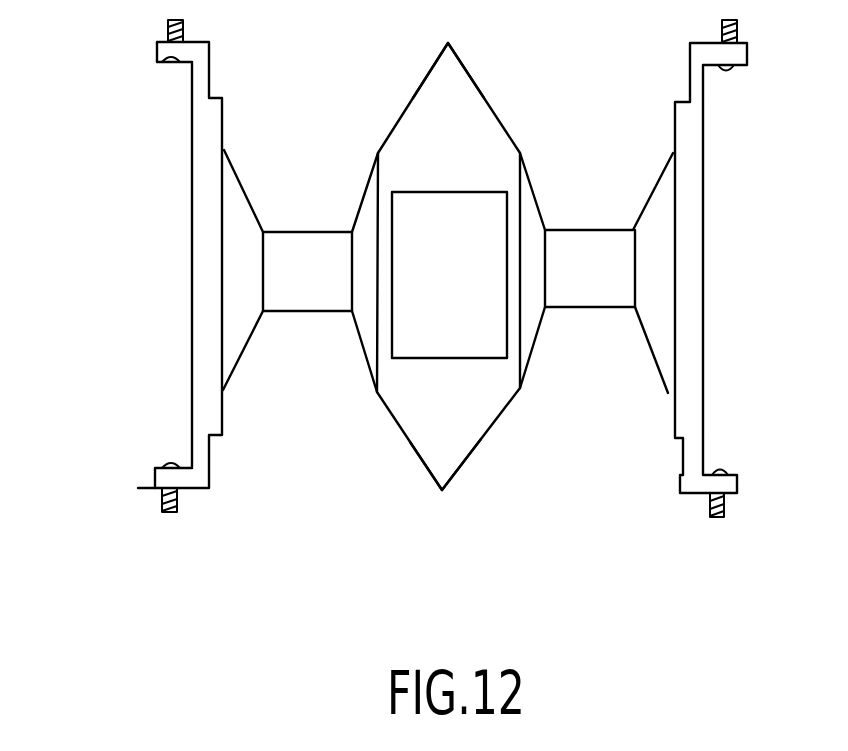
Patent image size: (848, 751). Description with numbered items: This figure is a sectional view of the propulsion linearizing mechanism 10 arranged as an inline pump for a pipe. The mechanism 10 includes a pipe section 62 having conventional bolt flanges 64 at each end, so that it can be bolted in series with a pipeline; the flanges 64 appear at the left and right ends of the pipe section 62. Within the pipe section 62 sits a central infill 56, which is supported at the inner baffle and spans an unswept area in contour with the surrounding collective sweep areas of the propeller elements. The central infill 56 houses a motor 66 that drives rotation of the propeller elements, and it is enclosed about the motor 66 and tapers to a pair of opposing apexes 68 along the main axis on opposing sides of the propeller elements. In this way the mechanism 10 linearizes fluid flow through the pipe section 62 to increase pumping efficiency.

The propulsion linearizing mechanism 10 is at (284, 278).
The central infill 56 is at (437, 118).
The pipe section 62 is at (205, 175).
The bolt flanges 64 is at (173, 52).
The motor 66 is at (458, 358).
The apexes 68 is at (448, 43).